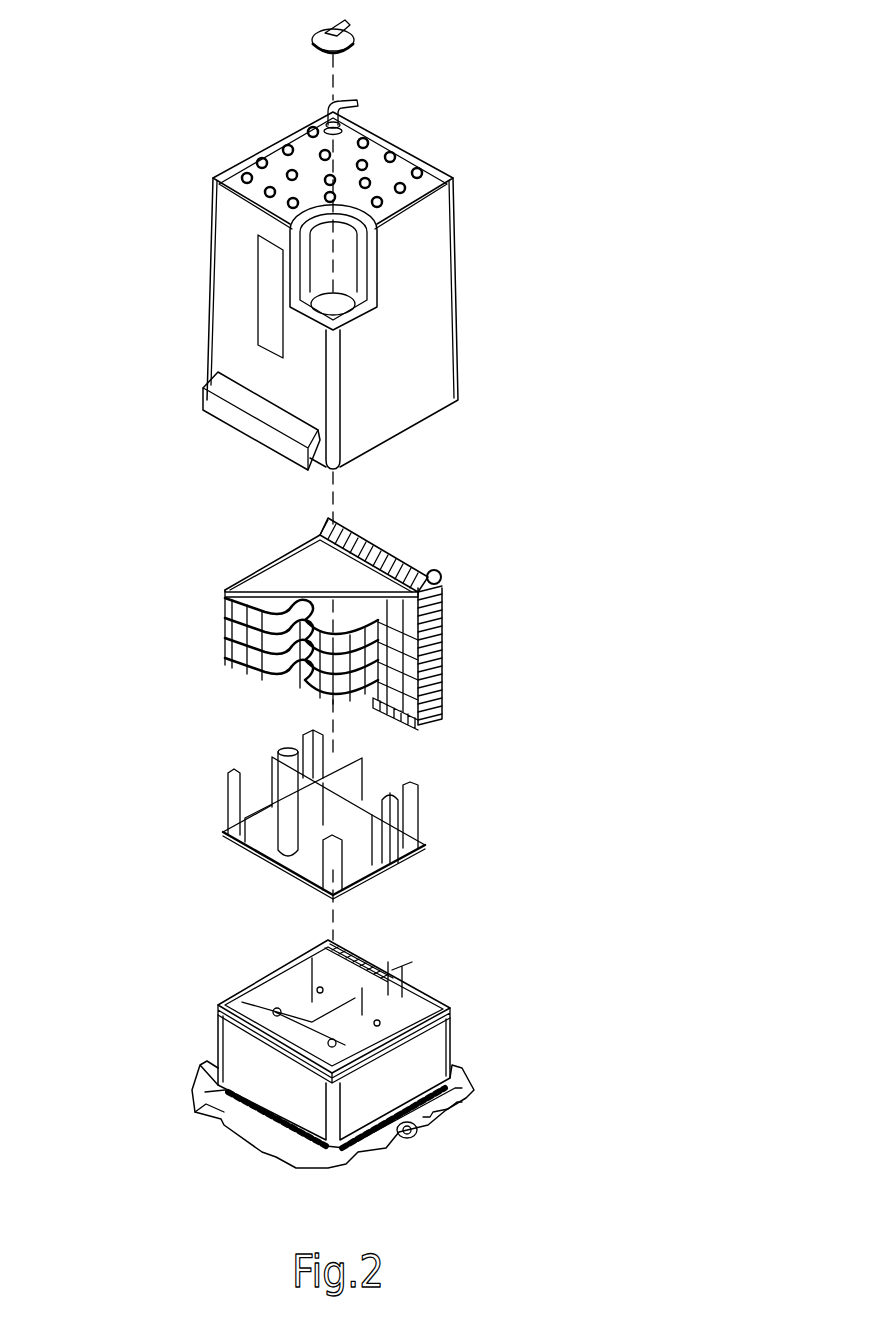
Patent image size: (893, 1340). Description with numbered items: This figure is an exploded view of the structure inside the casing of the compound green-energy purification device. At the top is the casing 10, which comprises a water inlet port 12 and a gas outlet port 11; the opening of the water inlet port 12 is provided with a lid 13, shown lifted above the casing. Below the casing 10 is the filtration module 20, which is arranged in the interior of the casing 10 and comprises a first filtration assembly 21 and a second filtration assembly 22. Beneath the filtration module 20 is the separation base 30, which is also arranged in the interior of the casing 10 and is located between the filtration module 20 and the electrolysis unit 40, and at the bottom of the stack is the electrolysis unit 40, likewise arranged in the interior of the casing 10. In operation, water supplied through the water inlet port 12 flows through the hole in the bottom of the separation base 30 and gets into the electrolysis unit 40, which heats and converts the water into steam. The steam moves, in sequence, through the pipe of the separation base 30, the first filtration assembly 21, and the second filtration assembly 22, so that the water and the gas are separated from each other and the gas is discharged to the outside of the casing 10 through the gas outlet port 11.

The casing 10 is at (393, 291).
The gas outlet port 11 is at (363, 103).
The water inlet port 12 is at (340, 304).
The lid 13 is at (343, 36).
The filtration module 20 is at (242, 595).
The first filtration assembly 21 is at (268, 582).
The second filtration assembly 22 is at (320, 525).
The separation base 30 is at (355, 785).
The electrolysis unit 40 is at (430, 990).